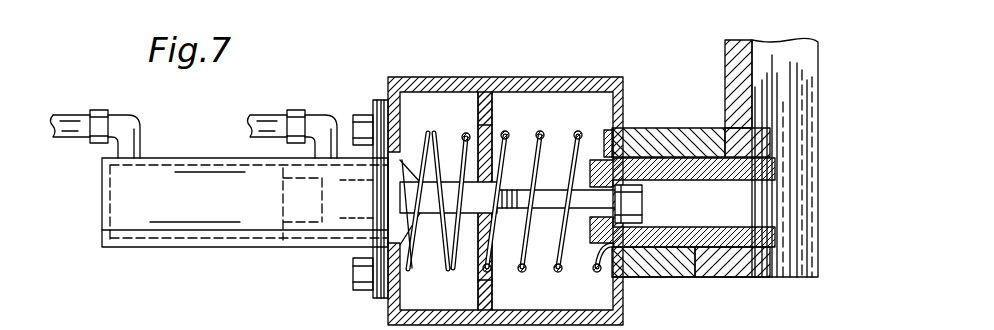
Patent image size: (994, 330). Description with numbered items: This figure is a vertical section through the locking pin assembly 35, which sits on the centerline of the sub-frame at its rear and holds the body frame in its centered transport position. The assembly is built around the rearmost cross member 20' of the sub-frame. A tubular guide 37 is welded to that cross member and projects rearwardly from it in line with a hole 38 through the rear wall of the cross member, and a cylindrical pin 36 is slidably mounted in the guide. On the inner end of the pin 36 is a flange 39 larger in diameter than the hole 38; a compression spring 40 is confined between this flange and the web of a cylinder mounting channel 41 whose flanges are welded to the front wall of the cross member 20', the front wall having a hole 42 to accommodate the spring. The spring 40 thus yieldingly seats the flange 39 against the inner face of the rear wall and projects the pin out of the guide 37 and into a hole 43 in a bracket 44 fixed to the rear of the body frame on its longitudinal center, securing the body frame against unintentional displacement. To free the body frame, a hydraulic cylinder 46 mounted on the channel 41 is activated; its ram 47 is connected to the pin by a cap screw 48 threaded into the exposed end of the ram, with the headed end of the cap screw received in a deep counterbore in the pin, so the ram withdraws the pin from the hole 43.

The rearmost cross member 20' is at (505, 181).
The locking pin assembly 35 is at (658, 33).
The cylindrical pin 36 is at (705, 245).
The tubular guide 37 is at (675, 128).
The hole 38 is at (547, 218).
The flange 39 is at (612, 127).
The compression spring 40 is at (425, 130).
The cylinder mounting channel 41 is at (388, 120).
The hole 42 is at (480, 277).
The hole 43 is at (742, 162).
The bracket 44 is at (752, 272).
The hydraulic cylinder 46 is at (252, 250).
The ram 47 is at (425, 207).
The cap screw 48 is at (628, 208).